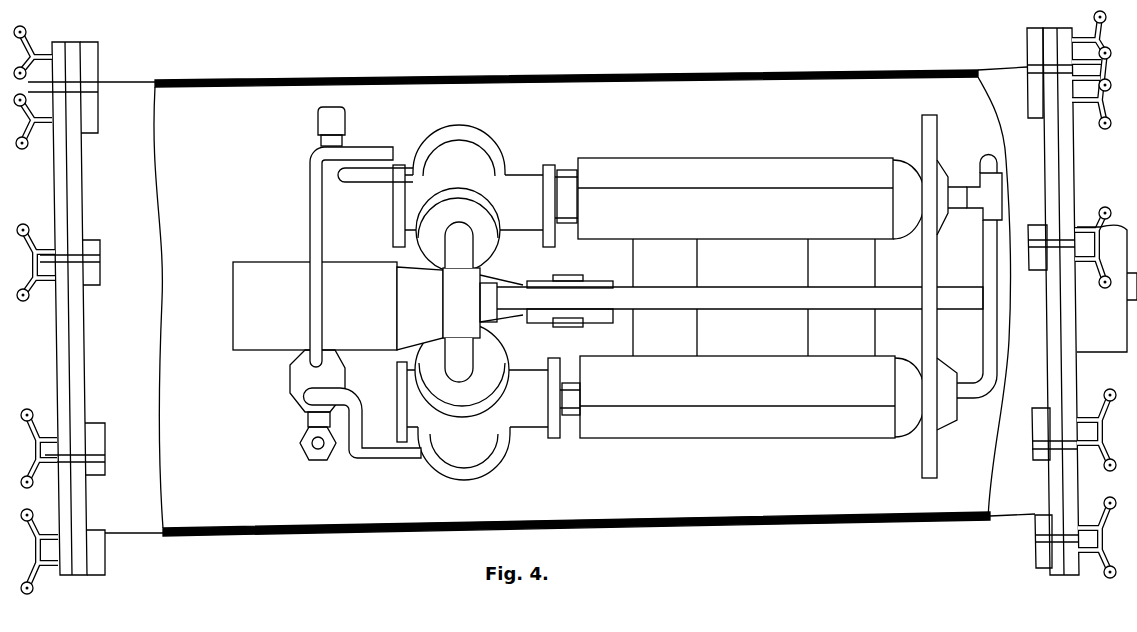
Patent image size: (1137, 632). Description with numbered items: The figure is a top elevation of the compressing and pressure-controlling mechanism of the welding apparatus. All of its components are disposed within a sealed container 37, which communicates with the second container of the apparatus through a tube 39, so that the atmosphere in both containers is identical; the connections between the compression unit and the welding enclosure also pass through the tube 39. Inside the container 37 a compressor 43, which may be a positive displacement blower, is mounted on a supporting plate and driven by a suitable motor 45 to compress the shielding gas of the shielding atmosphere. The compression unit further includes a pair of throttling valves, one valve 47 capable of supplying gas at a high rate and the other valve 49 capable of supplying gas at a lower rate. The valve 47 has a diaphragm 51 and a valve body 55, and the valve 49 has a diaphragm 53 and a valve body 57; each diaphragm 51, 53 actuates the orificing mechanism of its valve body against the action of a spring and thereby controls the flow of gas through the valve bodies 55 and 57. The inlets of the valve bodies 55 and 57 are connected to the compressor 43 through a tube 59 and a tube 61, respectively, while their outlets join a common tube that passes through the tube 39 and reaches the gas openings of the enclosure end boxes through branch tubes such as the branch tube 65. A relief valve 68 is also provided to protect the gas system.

The container 37 is at (689, 558).
The tube 39 is at (1113, 243).
The compressor 43 is at (253, 350).
The motor 45 is at (750, 346).
The valve 47 is at (781, 148).
The valve 49 is at (758, 464).
The diaphragm 51 is at (906, 152).
The diaphragm 53 is at (915, 436).
The valve body 55 is at (456, 147).
The valve body 57 is at (440, 450).
The tube 59 is at (312, 172).
The tube 61 is at (393, 452).
The branch tube 65 is at (751, 268).
The relief valve 68 is at (310, 444).